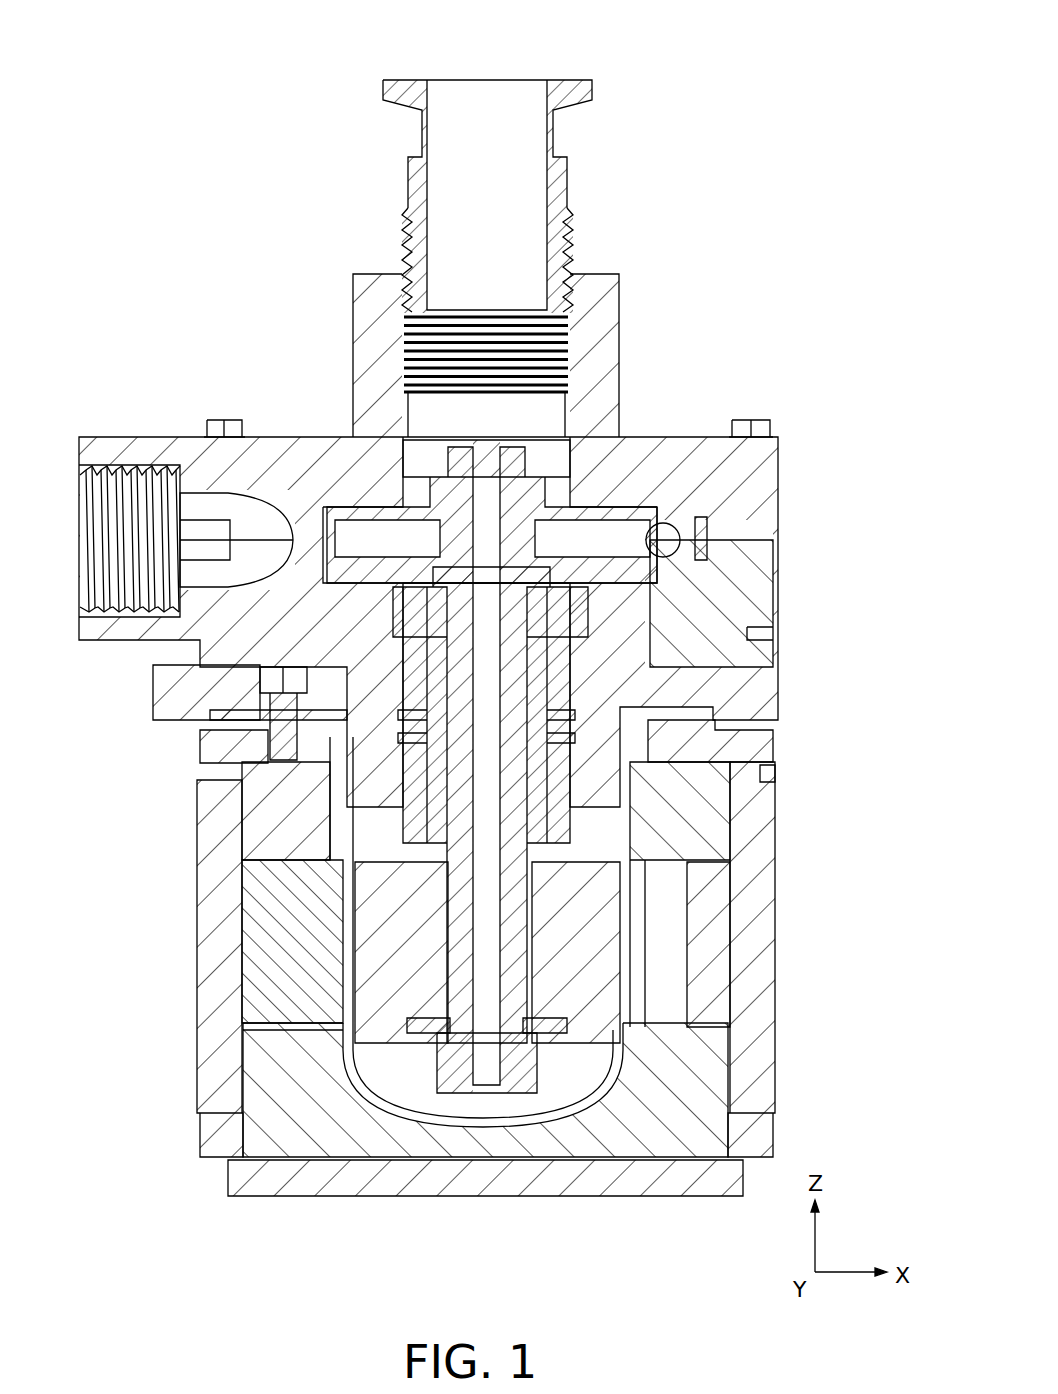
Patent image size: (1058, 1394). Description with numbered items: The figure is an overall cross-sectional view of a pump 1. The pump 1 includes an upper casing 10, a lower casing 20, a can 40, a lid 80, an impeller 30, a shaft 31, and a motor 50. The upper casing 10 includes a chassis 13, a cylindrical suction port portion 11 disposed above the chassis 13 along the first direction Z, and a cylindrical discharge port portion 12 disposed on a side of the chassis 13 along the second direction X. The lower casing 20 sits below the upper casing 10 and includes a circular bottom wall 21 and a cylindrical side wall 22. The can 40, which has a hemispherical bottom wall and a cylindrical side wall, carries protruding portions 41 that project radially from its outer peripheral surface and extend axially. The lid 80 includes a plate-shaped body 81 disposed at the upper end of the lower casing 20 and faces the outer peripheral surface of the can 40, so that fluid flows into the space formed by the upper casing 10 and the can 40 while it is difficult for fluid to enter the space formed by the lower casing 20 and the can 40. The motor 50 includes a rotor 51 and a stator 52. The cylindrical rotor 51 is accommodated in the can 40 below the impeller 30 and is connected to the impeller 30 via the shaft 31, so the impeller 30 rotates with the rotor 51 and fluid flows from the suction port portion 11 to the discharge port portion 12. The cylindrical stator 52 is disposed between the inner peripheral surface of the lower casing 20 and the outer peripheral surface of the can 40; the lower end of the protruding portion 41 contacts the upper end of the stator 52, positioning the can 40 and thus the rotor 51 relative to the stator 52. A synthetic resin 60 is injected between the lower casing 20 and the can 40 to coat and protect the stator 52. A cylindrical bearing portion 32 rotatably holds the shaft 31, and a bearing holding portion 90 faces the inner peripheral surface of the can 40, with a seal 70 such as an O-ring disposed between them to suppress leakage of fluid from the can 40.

The pump 1 is at (459, 655).
The upper casing 10 is at (375, 315).
The suction port portion 11 is at (507, 80).
The discharge port portion 12 is at (80, 487).
The chassis 13 is at (318, 438).
The lower casing 20 is at (409, 979).
The bottom wall 21 is at (288, 1150).
The side wall 22 is at (215, 1027).
The impeller 30 is at (600, 548).
The shaft 31 is at (545, 663).
The bearing portion 32 is at (512, 707).
The can 40 is at (340, 943).
The protruding portion 41 is at (330, 808).
The motor 50 is at (428, 1162).
The rotor 51 is at (423, 1030).
The stator 52 is at (302, 1030).
The synthetic resin 60 is at (687, 818).
The seal 70 is at (640, 752).
The lid 80 is at (208, 721).
The plate-shaped body 81 is at (213, 745).
The bearing holding portion 90 is at (172, 693).